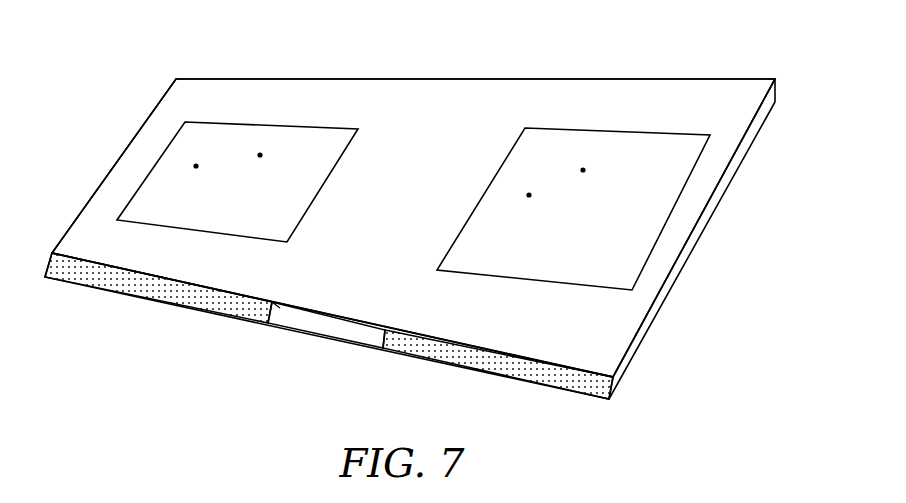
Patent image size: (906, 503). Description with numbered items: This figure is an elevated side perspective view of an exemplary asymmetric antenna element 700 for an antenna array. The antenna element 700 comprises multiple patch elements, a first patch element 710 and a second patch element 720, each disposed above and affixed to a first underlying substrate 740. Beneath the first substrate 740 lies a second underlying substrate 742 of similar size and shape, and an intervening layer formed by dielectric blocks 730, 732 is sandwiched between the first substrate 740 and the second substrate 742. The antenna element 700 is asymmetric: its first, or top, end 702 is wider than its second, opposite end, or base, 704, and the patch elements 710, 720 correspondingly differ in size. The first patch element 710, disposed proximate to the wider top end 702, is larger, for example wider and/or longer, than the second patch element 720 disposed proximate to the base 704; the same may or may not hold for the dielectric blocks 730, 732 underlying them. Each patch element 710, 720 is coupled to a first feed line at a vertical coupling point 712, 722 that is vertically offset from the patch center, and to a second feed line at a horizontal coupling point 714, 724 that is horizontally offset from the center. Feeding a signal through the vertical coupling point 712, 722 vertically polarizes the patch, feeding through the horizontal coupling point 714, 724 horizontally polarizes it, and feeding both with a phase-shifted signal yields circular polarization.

The asymmetric antenna element 700 is at (82, 44).
The first end 702 is at (693, 252).
The second end 704 is at (115, 163).
The first patch element 710 is at (627, 163).
The vertical coupling point 712 is at (529, 195).
The horizontal coupling point 714 is at (583, 170).
The second patch element 720 is at (287, 158).
The vertical coupling point 722 is at (196, 166).
The horizontal coupling point 724 is at (260, 155).
The dielectric block 730 is at (542, 375).
The dielectric block 732 is at (135, 285).
The first underlying substrate 740 is at (375, 212).
The second underlying substrate 742 is at (328, 342).